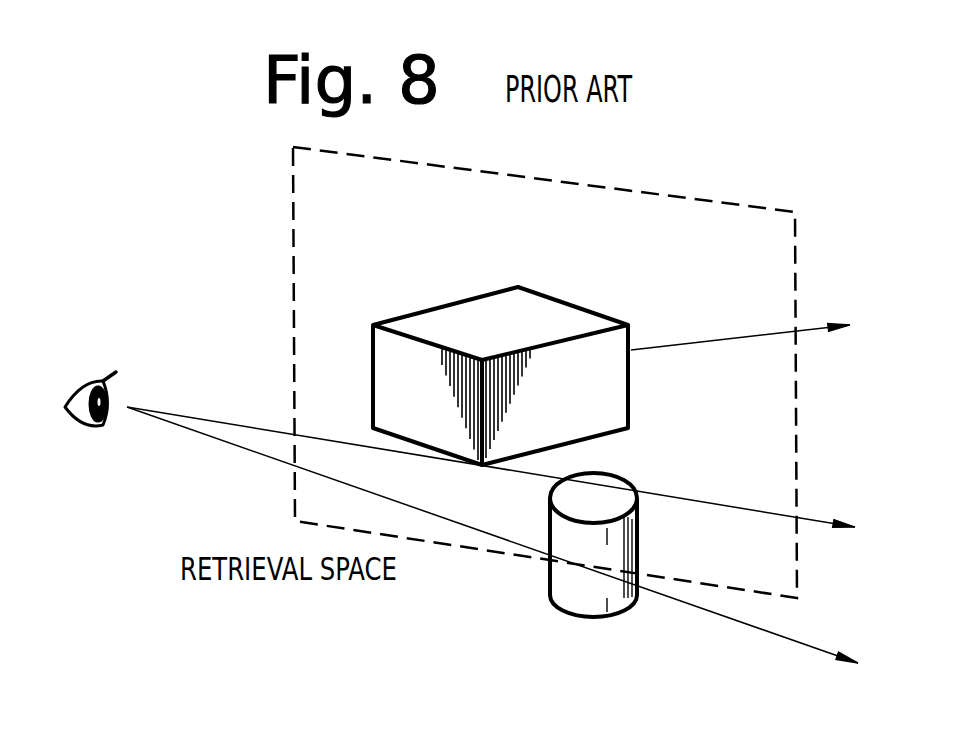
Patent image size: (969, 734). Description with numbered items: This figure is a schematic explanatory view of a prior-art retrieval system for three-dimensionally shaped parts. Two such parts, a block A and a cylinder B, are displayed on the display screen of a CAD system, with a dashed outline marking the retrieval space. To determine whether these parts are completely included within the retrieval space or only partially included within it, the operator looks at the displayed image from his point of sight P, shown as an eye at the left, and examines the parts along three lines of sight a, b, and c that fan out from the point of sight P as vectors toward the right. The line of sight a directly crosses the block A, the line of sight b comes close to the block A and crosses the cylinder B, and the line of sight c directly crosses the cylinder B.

The point of sight P is at (94, 360).
The block A is at (127, 407).
The cylinder B is at (593, 576).
The line of sight a is at (753, 321).
The line of sight b is at (503, 476).
The line of sight c is at (503, 544).